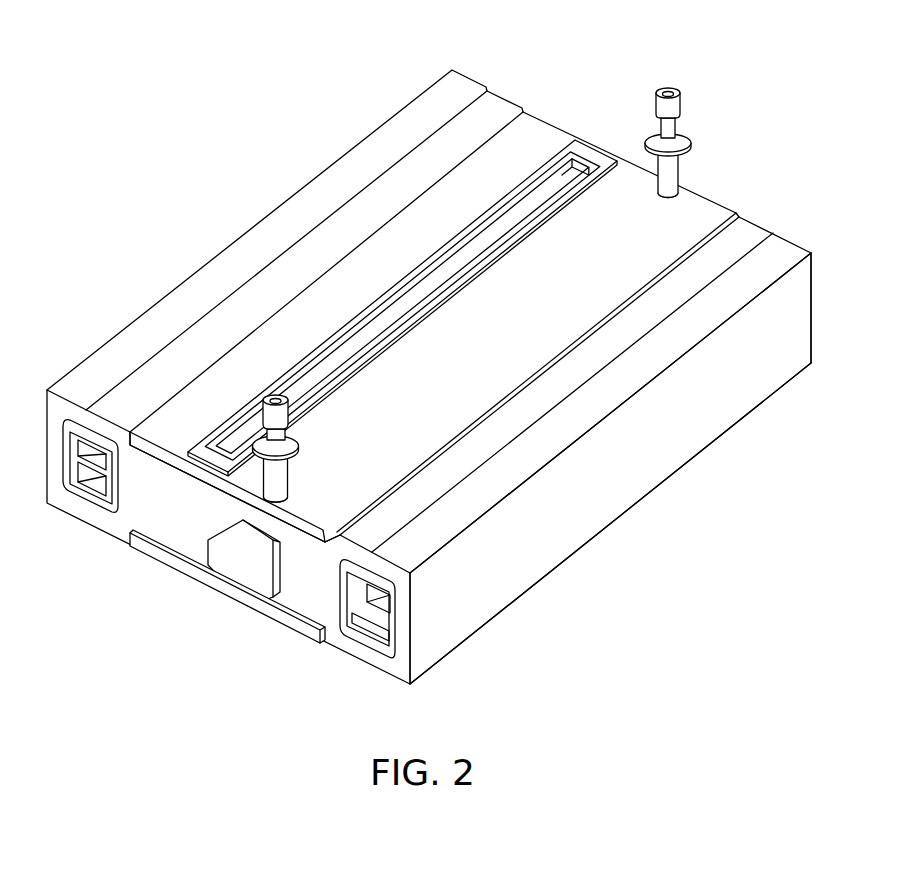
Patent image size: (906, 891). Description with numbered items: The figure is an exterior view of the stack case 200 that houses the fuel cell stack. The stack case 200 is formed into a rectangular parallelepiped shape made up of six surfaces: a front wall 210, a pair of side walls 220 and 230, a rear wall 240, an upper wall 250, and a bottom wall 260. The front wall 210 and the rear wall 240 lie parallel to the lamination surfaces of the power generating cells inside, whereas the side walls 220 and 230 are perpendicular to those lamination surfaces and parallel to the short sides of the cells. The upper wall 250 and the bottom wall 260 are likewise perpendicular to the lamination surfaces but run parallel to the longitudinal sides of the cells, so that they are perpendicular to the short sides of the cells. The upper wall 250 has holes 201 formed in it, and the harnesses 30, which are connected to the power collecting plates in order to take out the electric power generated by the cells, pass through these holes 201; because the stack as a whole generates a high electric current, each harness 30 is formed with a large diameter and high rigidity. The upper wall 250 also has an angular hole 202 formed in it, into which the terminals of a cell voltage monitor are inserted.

The stack case 200 is at (457, 92).
The holes 201 is at (288, 490).
The angular hole 202 is at (571, 139).
The harnesses 30 is at (288, 473).
The front wall 210 is at (190, 545).
The side wall 220 is at (721, 415).
The side wall 230 is at (58, 455).
The rear wall 240 is at (803, 247).
The upper wall 250 is at (714, 208).
The bottom wall 260 is at (513, 601).